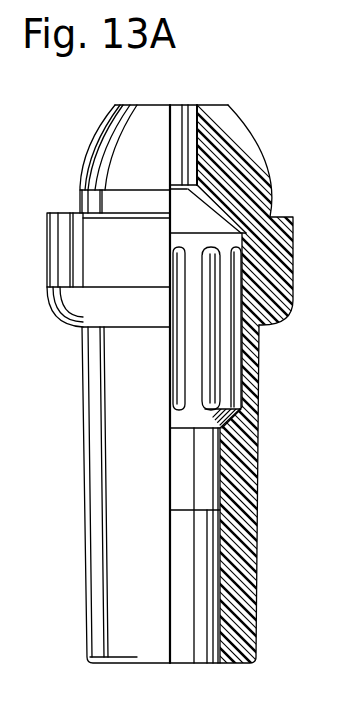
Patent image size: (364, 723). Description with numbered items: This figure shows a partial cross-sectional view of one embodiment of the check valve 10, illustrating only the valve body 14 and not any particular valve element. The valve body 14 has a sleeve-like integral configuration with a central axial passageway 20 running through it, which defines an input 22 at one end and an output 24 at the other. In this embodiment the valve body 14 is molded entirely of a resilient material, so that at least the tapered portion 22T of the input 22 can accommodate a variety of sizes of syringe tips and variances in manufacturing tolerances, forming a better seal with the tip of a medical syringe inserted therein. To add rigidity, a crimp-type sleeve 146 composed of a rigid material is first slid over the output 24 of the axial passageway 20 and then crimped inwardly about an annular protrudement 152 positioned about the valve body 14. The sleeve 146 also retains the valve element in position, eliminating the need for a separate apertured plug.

The check valve 10 is at (94, 88).
The output 24 is at (187, 97).
The sleeve 146 is at (257, 145).
The annular protrudement 152 is at (270, 268).
The central axial passageway 20 is at (213, 373).
The valve body 14 is at (256, 463).
The tapered portion 22T is at (223, 588).
The input 22 is at (158, 672).